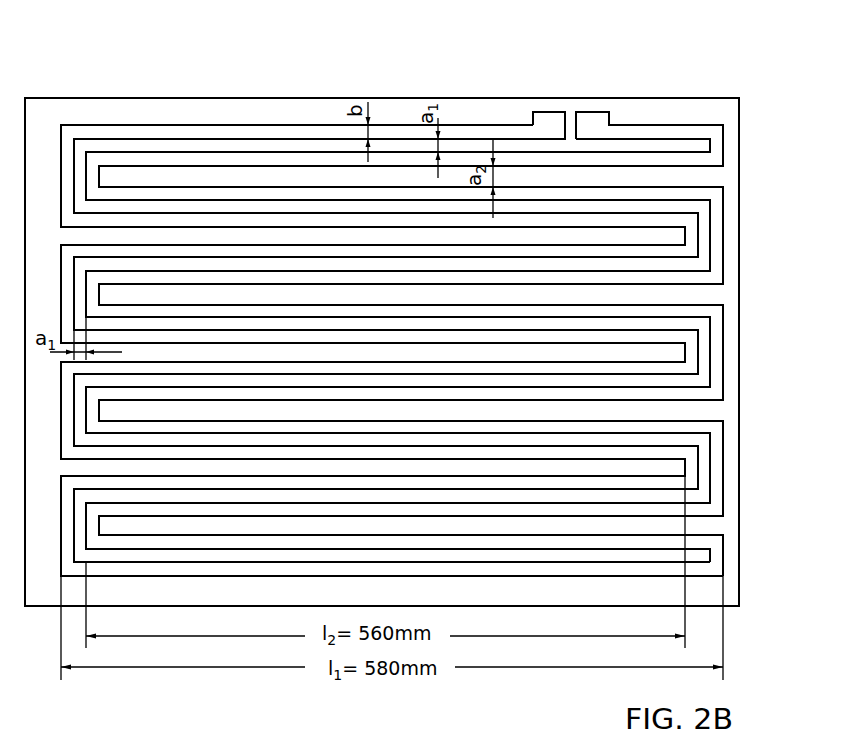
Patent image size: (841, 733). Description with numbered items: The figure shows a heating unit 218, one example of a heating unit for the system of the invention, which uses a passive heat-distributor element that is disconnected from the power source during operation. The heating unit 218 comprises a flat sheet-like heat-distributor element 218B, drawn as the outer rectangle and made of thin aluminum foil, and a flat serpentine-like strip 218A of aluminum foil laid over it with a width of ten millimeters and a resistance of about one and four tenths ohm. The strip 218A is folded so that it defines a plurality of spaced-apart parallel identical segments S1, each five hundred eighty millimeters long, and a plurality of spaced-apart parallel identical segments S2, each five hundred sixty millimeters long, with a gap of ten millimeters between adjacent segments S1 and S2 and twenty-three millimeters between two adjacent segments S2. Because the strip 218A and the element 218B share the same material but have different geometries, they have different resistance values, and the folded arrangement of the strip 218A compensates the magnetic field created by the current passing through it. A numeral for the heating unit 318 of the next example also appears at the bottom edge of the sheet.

The heating unit 218 is at (413, 308).
The flat serpentine-like strip 218A is at (395, 305).
The flat sheet-like heat-distributor element 218B is at (697, 97).
The segments S1 is at (165, 222).
The segments S2 is at (305, 195).
The heating unit 318 is at (295, 732).